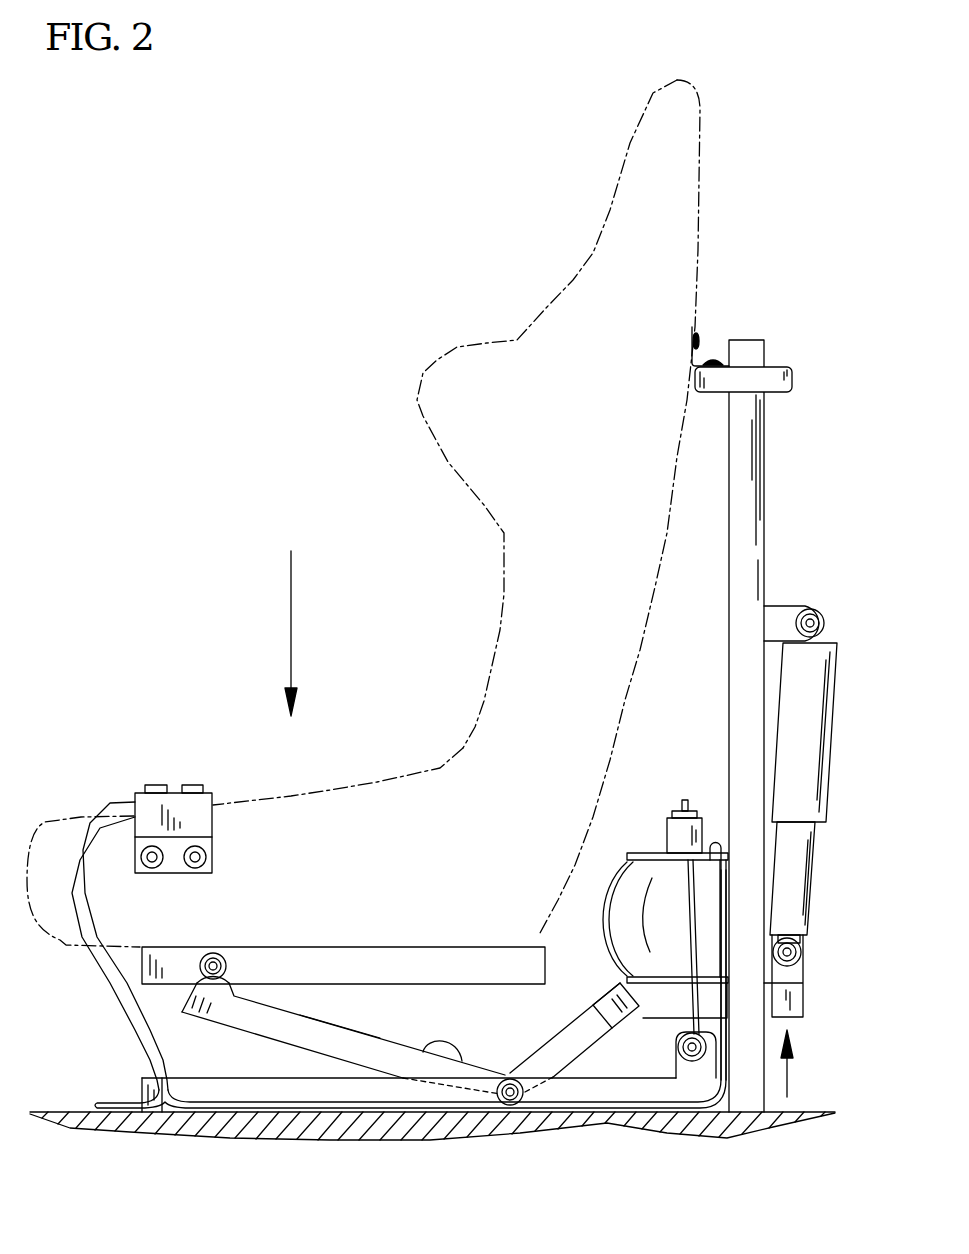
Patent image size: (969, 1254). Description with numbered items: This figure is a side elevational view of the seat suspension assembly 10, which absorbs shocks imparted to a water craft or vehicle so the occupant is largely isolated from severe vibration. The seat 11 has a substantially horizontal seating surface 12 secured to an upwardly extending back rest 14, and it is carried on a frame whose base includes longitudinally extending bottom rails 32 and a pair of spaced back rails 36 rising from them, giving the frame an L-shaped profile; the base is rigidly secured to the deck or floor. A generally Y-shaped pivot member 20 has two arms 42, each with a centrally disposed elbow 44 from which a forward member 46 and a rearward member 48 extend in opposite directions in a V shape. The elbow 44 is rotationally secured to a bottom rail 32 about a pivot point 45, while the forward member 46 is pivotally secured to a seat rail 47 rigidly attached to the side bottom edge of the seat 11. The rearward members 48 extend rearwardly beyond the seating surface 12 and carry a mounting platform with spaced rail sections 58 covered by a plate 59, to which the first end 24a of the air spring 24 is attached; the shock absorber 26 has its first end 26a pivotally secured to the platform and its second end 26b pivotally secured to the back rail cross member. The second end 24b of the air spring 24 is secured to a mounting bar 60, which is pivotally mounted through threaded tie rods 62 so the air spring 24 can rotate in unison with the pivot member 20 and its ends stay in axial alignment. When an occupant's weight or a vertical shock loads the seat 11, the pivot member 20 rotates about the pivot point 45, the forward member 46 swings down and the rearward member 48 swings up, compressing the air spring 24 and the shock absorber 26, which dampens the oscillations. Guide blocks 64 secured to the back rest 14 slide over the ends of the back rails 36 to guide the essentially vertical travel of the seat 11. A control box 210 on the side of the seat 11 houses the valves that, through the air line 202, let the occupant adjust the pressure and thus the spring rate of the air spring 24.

The seat suspension assembly 10 is at (190, 218).
The seat 11 is at (523, 667).
The seating surface 12 is at (298, 822).
The back rest 14 is at (495, 333).
The pivot member 20 is at (560, 1060).
The air spring 24 is at (643, 910).
The air spring first end 24a is at (640, 962).
The air spring second end 24b is at (648, 870).
The shock absorber 26 is at (810, 777).
The shock absorber first end 26a is at (800, 963).
The shock absorber second end 26b is at (828, 612).
The longitudinal rails 32 is at (208, 1093).
The back rails 36 is at (757, 483).
The arms 42 is at (342, 1044).
The elbow 44 is at (436, 1044).
The pivot point 45 is at (498, 1091).
The forward member 46 is at (258, 1022).
The seat rails 47 is at (412, 960).
The rearward member 48 is at (595, 1033).
The rail sections 58 is at (667, 1010).
The plate 59 is at (692, 815).
The mounting bar 60 is at (700, 1068).
The threaded tie rods 62 is at (683, 897).
The guide blocks 64 is at (778, 365).
The air line 202 is at (710, 1097).
The control box 210 is at (143, 807).